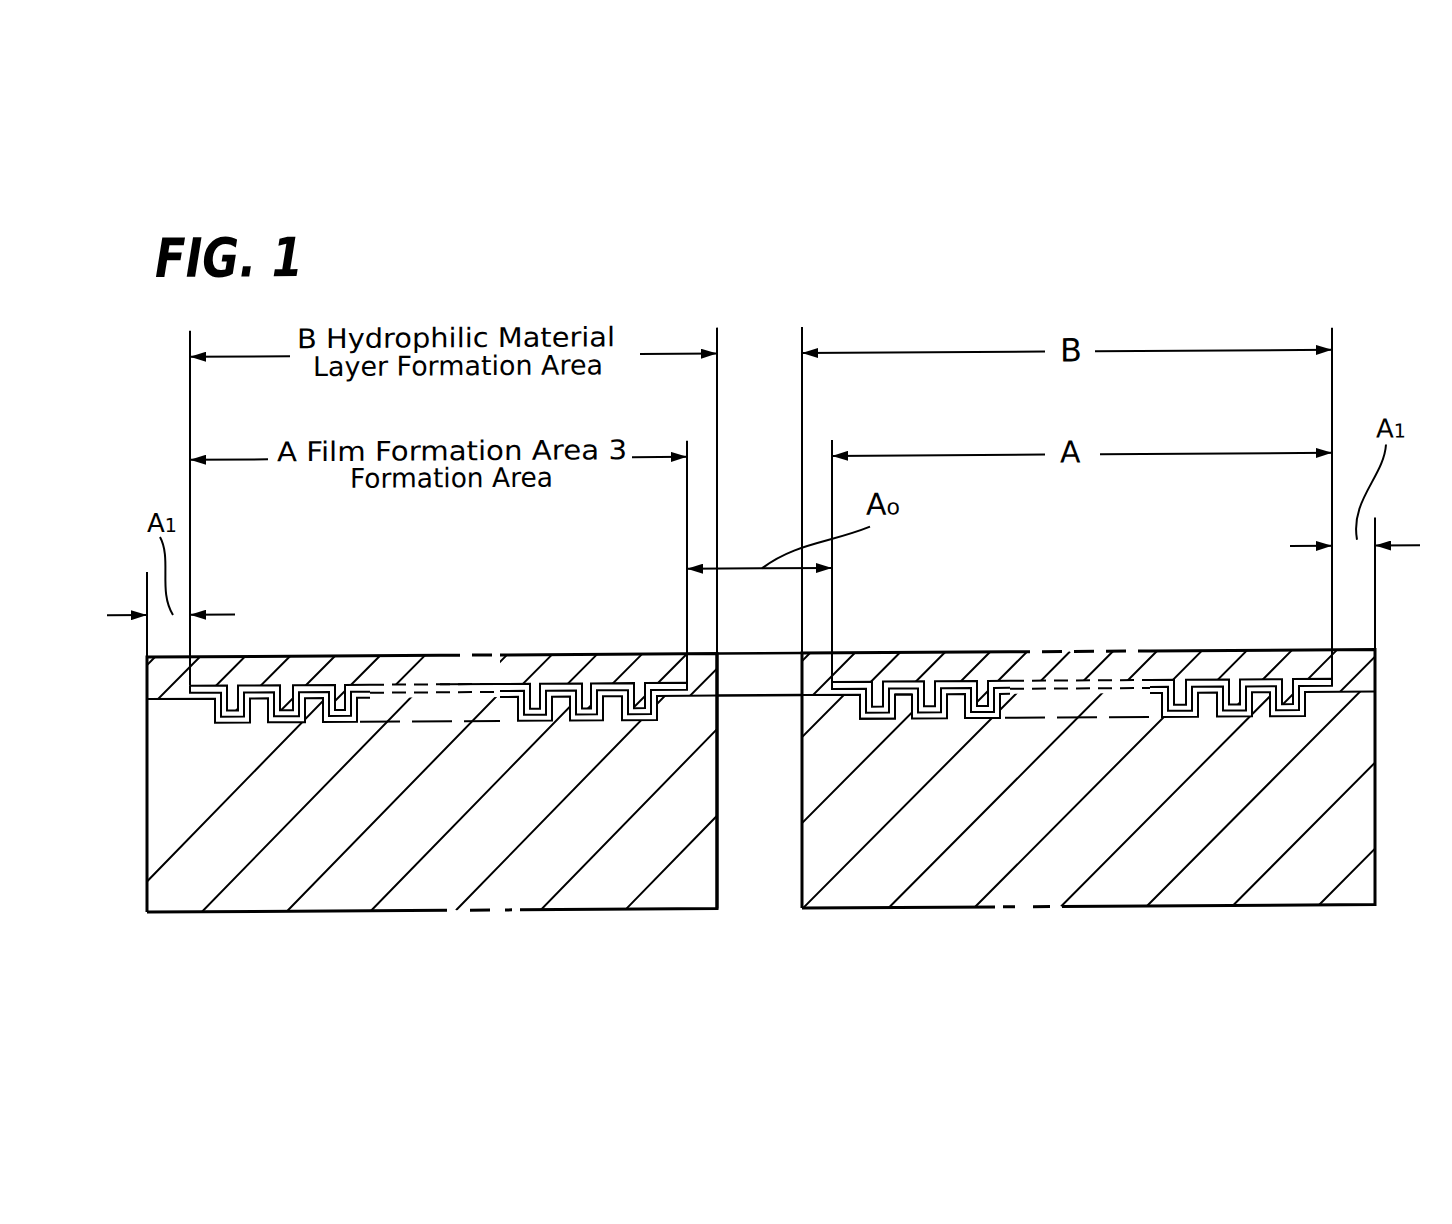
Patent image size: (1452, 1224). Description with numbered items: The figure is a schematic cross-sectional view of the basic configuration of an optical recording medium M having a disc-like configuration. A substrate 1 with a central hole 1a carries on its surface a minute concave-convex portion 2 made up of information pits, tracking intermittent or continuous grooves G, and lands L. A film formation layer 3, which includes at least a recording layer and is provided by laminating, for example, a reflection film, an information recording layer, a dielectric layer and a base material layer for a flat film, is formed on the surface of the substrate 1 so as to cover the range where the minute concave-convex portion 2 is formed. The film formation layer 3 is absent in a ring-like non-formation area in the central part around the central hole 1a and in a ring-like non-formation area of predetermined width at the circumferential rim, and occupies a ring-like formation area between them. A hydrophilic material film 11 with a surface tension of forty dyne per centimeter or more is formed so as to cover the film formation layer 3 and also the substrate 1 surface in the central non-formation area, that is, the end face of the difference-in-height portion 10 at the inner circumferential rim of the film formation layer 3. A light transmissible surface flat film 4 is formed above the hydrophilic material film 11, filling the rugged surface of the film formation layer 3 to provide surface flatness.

The substrate 1 is at (967, 879).
The central hole 1a is at (717, 862).
The minute concave-convex portion 2 is at (947, 616).
The film formation layer 3 is at (1335, 698).
The surface flat film 4 is at (363, 675).
The difference-in-height portion 10 is at (683, 692).
The hydrophilic material film 11 is at (487, 693).
The land L is at (962, 696).
The groove G is at (984, 700).
The optical recording medium M is at (1197, 1000).